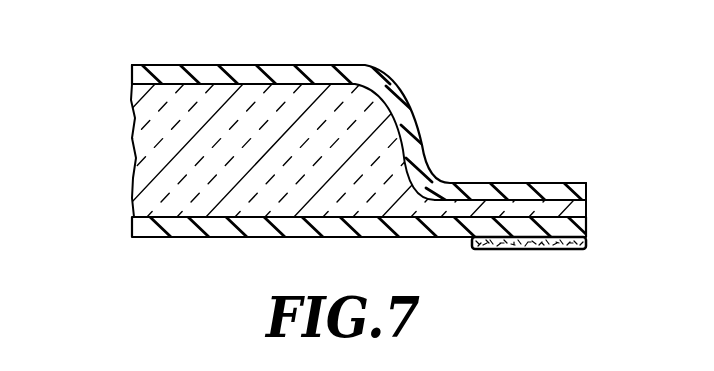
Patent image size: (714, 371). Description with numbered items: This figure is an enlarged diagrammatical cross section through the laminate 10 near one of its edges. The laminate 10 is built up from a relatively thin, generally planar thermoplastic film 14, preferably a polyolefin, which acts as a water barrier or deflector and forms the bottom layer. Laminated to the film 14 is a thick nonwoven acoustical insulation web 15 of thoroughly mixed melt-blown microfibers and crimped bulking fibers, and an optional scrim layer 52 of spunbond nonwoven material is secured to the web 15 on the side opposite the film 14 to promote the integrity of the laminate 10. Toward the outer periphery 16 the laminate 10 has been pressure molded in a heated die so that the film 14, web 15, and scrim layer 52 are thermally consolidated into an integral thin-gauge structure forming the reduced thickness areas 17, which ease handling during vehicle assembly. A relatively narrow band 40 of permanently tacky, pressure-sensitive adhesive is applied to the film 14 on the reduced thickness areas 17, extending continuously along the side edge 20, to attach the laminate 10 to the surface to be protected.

The laminate 10 is at (118, 74).
The thermoplastic film 14 is at (131, 236).
The nonwoven acoustical insulation web 15 is at (136, 153).
The outer periphery 16 is at (573, 182).
The reduced thickness areas 17 is at (503, 176).
The side edge 20 is at (588, 204).
The band of adhesive 40 is at (545, 249).
The scrim layer 52 is at (189, 70).